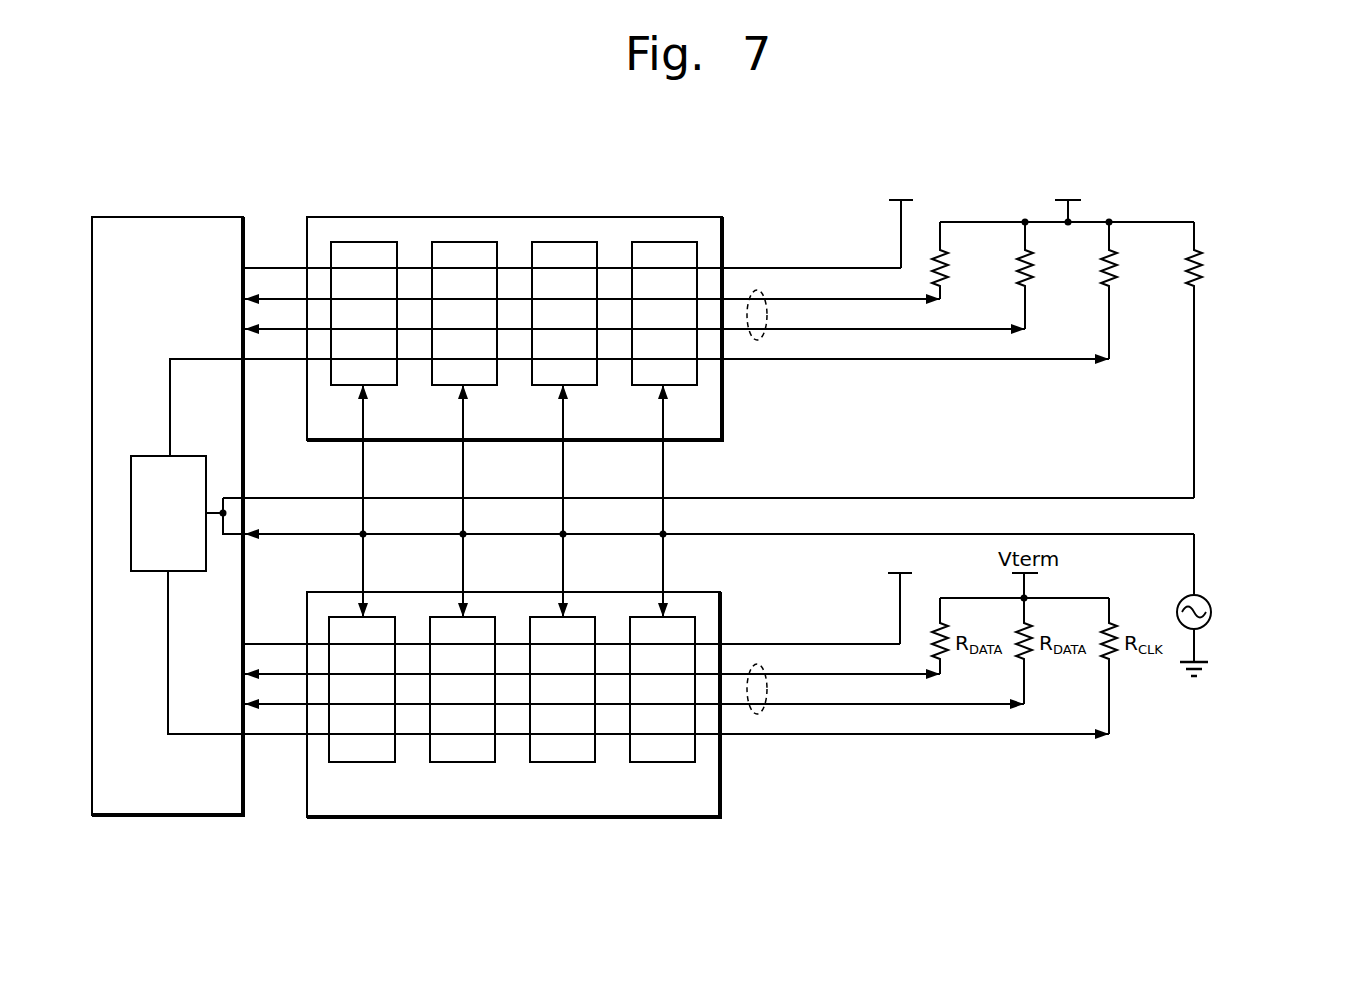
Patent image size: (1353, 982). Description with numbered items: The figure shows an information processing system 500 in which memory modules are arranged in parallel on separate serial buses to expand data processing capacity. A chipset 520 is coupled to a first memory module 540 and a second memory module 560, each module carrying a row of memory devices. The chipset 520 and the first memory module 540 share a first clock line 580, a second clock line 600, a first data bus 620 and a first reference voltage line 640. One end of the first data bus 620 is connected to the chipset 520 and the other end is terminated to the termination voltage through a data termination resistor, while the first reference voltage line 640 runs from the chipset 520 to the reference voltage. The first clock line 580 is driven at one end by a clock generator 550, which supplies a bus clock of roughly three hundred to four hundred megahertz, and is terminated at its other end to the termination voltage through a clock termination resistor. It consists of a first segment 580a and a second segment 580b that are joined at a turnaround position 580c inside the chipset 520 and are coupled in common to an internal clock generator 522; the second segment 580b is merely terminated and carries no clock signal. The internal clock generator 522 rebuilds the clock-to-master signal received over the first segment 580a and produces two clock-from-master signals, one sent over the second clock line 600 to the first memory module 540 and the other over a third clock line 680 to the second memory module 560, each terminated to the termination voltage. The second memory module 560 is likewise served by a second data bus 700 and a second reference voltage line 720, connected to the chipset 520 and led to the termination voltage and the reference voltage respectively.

The memory system 500 is at (1262, 140).
The chipset 520 is at (185, 217).
The internal clock generator 522 is at (168, 513).
The first memory module 540 is at (662, 217).
The clock generator 550 is at (1180, 600).
The second memory module 560 is at (722, 592).
The first clock line 580 is at (1195, 550).
The first segment 580a is at (786, 536).
The second segment 580b is at (928, 498).
The turnaround position 580c is at (231, 527).
The second clock line 600 is at (836, 359).
The first data bus 620 is at (757, 290).
The first reference voltage line 640 is at (826, 268).
The third clock line 680 is at (836, 734).
The second data bus 700 is at (757, 714).
The second reference voltage line 720 is at (836, 644).